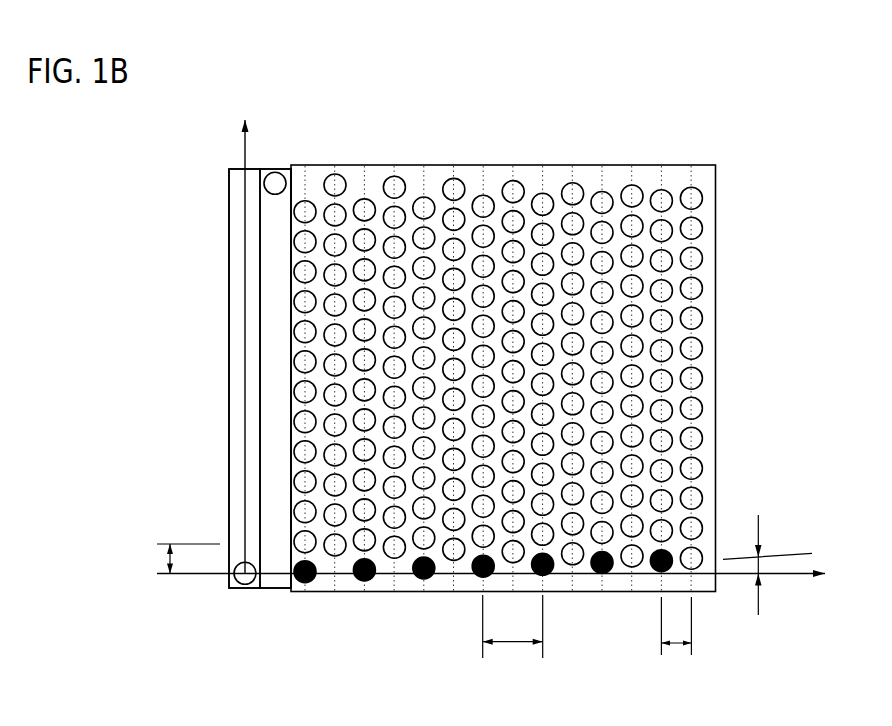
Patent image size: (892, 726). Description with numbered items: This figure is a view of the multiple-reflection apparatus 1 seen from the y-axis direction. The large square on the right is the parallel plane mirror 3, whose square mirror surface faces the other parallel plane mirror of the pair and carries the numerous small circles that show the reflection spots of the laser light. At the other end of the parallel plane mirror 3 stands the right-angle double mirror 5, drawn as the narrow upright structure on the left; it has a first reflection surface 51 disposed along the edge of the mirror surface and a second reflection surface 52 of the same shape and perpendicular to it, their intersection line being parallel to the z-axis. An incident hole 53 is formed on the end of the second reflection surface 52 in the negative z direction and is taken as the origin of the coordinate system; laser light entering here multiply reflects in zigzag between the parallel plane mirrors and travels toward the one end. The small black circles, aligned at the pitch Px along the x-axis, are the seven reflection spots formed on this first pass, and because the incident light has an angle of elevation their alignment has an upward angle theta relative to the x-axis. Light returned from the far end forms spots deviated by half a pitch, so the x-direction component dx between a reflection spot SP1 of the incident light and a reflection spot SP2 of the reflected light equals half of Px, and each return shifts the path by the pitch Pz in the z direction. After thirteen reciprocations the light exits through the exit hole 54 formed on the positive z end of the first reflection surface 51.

The multiple-reflection apparatus 1 is at (170, 167).
The parallel plane mirror 3 is at (672, 163).
The right-angle double mirror 5 is at (272, 598).
The first reflection surface 51 is at (277, 385).
The second reflection surface 52 is at (236, 300).
The incident hole 53 is at (245, 584).
The exit hole 54 is at (262, 185).
The reflection spot SP1 is at (648, 572).
The reflection spot SP2 is at (700, 568).